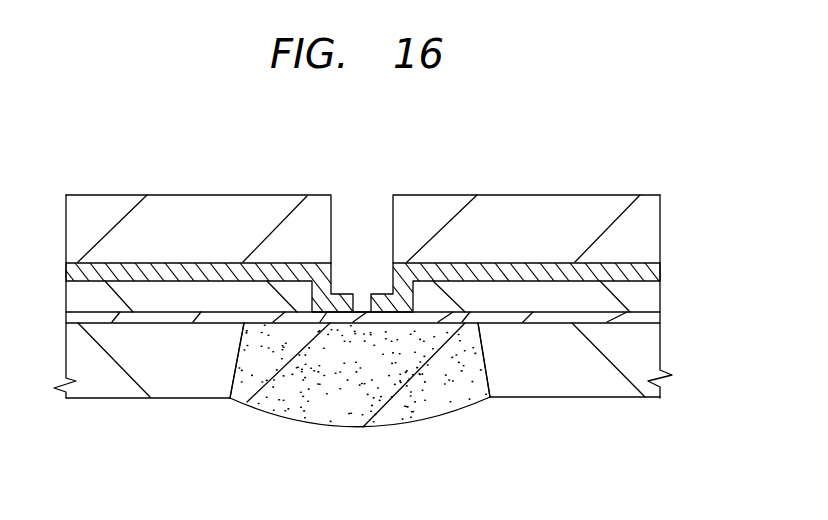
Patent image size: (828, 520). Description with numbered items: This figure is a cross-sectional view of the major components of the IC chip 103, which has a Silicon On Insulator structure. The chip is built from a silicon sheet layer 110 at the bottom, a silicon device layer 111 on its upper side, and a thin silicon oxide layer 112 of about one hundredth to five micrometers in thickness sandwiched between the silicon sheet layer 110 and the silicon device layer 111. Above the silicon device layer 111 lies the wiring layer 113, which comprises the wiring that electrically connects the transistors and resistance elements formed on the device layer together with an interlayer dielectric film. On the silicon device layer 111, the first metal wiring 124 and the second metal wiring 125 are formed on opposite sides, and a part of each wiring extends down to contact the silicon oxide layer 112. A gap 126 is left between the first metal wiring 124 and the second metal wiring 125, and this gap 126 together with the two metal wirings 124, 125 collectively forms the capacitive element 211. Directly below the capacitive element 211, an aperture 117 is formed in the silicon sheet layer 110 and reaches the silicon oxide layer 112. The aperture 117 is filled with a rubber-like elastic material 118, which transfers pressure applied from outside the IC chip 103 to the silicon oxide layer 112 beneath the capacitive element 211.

The IC chip 103 is at (606, 192).
The wiring layer 113 is at (532, 202).
The second metal wiring 125 is at (278, 267).
The gap 126 is at (367, 235).
The first metal wiring 124 is at (462, 267).
The capacitive element 211 is at (293, 150).
The silicon device layer 111 is at (178, 302).
The silicon oxide layer 112 is at (540, 322).
The silicon sheet layer 110 is at (603, 390).
The rubber-like elastic material 118 is at (302, 407).
The aperture 117 is at (483, 377).